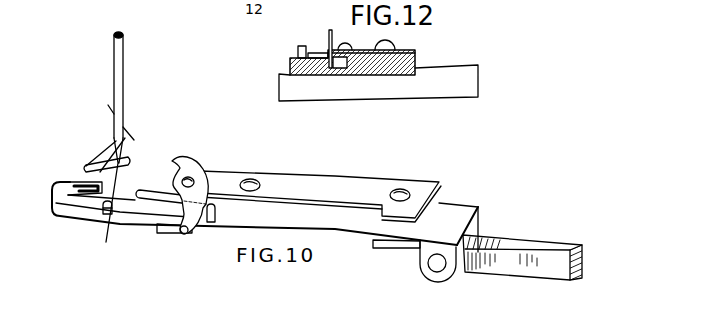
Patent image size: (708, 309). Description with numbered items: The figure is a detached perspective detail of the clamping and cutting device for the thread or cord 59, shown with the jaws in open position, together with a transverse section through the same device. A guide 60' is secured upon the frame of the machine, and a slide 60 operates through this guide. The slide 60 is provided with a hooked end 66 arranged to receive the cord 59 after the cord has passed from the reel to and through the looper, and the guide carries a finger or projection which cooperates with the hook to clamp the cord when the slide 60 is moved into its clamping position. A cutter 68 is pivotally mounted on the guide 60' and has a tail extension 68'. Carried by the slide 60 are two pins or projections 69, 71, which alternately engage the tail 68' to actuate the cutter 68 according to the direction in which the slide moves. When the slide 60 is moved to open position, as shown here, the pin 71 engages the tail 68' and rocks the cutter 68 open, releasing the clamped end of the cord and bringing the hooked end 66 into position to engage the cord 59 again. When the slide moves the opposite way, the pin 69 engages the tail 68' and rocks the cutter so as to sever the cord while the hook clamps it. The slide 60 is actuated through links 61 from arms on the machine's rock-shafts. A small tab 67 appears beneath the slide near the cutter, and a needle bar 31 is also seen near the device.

In FIG. 10, the needle bar 31 is at (119, 80).
In FIG. 10, the thread or cord 59 is at (118, 187).
In FIG. 12, the thread or cord 59 is at (333, 33).
In FIG. 10, the slide 60 is at (245, 232).
In FIG. 10, the guide 60' is at (320, 189).
In FIG. 12, the guide 60' is at (364, 76).
In FIG. 10, the links 61 is at (143, 199).
In FIG. 10, the hooked end 66 is at (72, 183).
In FIG. 10, the retaining tab 67 is at (167, 230).
In FIG. 10, the cutter 68 is at (200, 188).
In FIG. 10, the tail extension 68' is at (190, 244).
In FIG. 10, the pin or projection 69 is at (104, 215).
In FIG. 10, the pin or projection 71 is at (214, 222).